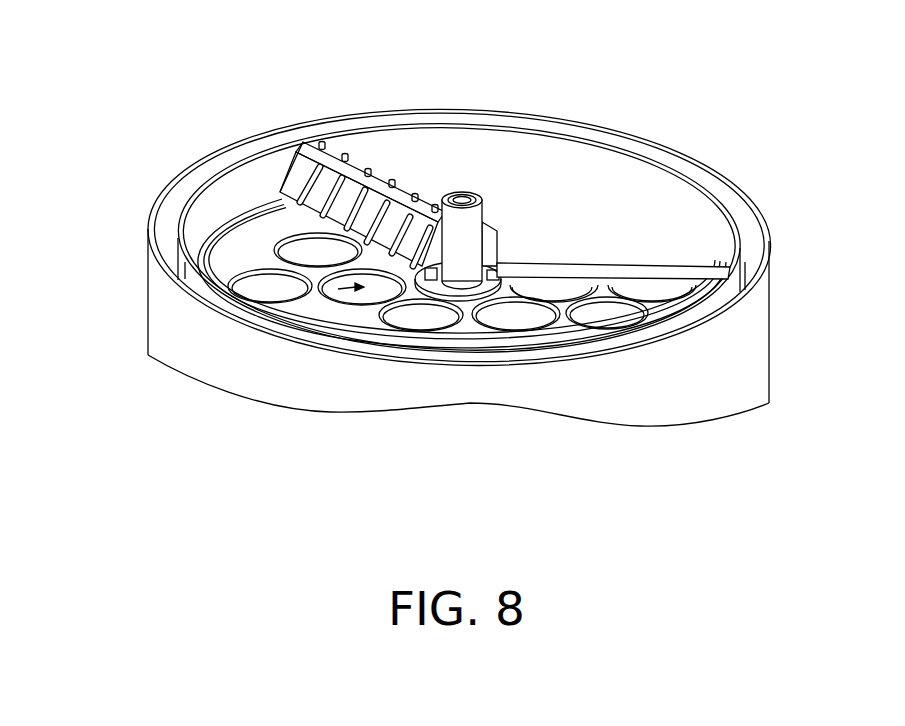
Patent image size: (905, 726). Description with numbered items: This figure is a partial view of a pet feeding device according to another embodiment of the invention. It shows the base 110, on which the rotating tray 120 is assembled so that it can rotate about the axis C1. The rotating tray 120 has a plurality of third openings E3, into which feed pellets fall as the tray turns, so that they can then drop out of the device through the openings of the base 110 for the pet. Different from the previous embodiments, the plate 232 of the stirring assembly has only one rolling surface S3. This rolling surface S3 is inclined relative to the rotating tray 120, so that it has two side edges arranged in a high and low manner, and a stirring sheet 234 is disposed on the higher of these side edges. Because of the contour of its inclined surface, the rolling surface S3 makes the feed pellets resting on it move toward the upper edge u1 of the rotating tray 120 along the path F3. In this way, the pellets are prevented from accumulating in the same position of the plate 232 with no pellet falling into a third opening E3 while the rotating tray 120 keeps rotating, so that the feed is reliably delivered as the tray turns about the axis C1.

The base 110 is at (178, 321).
The rotating tray 120 is at (245, 252).
The plate 232 is at (605, 190).
The stirring sheet 234 is at (303, 170).
The axis C1 is at (464, 196).
The upper edge u1 is at (268, 223).
The rolling surface S3 is at (533, 182).
The path F3 is at (507, 195).
The third opening E3 is at (318, 276).